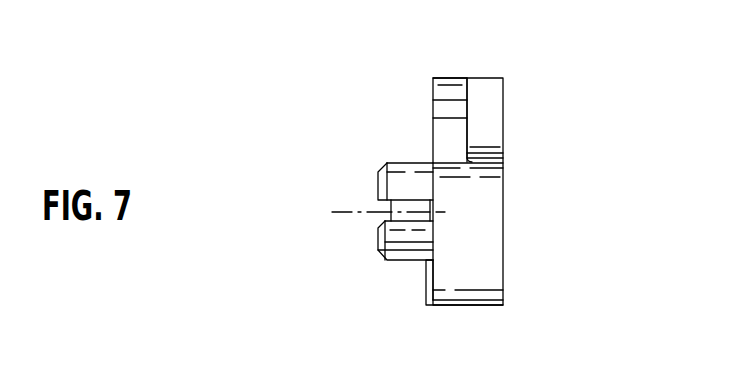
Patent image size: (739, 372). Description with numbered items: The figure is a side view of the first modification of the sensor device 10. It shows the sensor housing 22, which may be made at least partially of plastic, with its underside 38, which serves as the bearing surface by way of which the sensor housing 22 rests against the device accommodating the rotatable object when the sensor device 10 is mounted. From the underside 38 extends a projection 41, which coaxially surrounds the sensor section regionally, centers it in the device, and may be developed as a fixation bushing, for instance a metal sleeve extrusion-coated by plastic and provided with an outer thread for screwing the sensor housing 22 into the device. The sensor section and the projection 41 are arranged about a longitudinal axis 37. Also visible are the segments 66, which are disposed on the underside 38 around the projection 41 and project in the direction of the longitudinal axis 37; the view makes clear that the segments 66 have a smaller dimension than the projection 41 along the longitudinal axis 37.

The sensor device 10 is at (545, 150).
The sensor housing 22 is at (487, 97).
The underside 38 is at (434, 90).
The projection 41 is at (404, 181).
The longitudinal axis 37 is at (343, 213).
The segments 66 is at (432, 218).